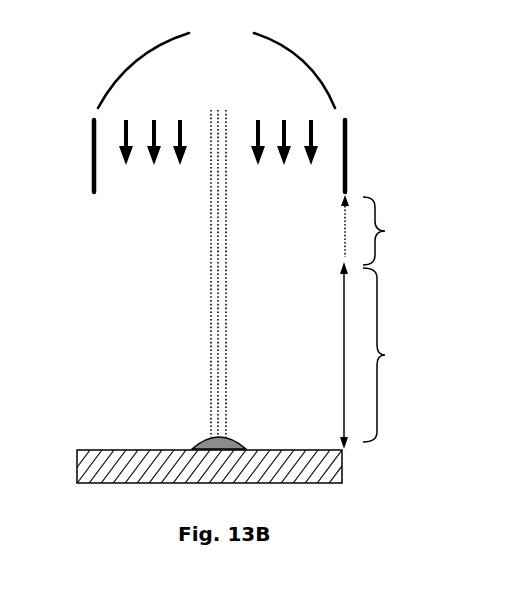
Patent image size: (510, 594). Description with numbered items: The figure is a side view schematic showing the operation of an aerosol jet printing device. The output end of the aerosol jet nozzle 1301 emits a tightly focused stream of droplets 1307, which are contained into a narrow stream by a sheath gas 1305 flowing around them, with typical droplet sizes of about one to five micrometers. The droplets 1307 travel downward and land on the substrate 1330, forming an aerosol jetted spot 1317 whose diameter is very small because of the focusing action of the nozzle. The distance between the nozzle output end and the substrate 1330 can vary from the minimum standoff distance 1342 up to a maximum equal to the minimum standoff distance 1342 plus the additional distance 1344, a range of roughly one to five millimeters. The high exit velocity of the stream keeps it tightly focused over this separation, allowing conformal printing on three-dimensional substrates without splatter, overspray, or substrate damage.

The aerosol jet nozzle 1301 is at (216, 88).
The sheath gas 1305 is at (110, 135).
The stream of droplets 1307 is at (210, 320).
The aerosol jetted spot 1317 is at (226, 443).
The substrate 1330 is at (322, 475).
The minimum standoff distance 1342 is at (389, 355).
The additional standoff distance 1344 is at (390, 230).